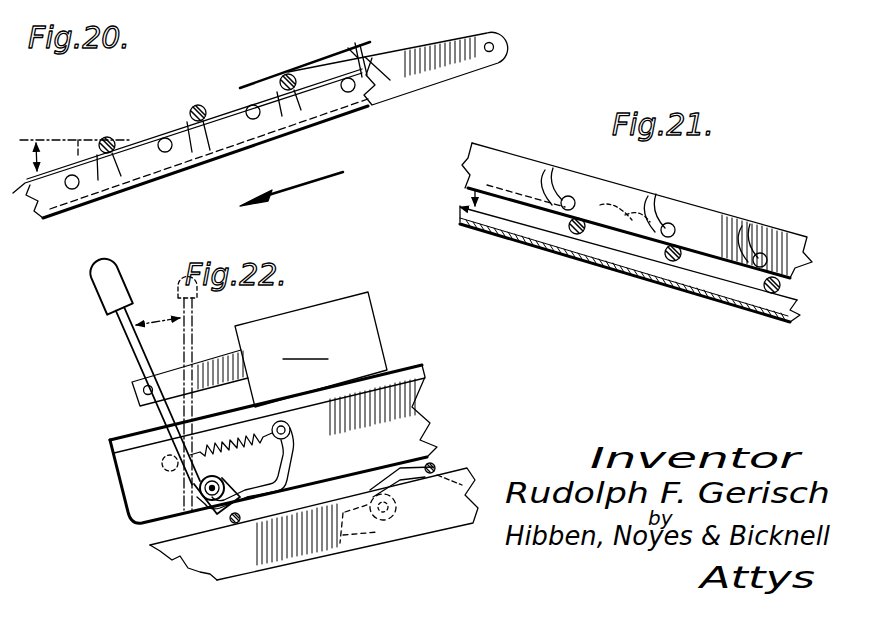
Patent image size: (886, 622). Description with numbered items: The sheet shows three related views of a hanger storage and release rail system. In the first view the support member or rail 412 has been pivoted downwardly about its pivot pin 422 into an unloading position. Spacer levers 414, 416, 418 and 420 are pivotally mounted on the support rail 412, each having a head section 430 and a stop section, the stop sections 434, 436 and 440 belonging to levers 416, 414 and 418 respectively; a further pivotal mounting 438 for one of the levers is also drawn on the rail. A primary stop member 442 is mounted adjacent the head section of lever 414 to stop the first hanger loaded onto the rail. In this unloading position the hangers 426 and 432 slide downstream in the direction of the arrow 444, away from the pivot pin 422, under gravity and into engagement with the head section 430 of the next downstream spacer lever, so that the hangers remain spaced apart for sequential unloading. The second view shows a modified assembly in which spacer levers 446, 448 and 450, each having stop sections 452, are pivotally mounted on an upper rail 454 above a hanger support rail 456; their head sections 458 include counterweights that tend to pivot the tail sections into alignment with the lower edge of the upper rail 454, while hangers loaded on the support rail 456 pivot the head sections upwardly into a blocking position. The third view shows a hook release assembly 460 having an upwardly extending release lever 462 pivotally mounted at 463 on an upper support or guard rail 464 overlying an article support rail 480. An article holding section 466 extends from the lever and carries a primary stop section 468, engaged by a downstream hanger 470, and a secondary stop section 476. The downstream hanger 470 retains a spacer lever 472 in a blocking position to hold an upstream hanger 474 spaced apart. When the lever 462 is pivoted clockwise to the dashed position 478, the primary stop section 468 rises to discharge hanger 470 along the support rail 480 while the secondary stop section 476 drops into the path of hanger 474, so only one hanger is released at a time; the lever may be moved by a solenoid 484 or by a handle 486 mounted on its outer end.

In FIG. 20, the support member 412 is at (470, 77).
In FIG. 20, the spacer lever 414 is at (319, 70).
In FIG. 20, the spacer lever 416 is at (237, 100).
In FIG. 20, the spacer lever 418 is at (151, 128).
In FIG. 20, the spacer lever 420 is at (56, 165).
In FIG. 20, the pivot pin 422 is at (496, 47).
In FIG. 20, the hanger 426 is at (120, 118).
In FIG. 20, the head section 430 is at (274, 82).
In FIG. 20, the hanger 432 is at (200, 104).
In FIG. 20, the stop section 434 is at (204, 160).
In FIG. 20, the stop section 436 is at (292, 130).
In FIG. 20, the rivet 438 is at (288, 82).
In FIG. 20, the stop section 440 is at (98, 190).
In FIG. 20, the primary stop member 442 is at (372, 55).
In FIG. 20, the arrow 444 is at (312, 186).
In FIG. 21, the spacer lever 446 is at (740, 287).
In FIG. 21, the spacer lever 448 is at (635, 256).
In FIG. 21, the spacer lever 450 is at (536, 222).
In FIG. 21, the stop sections 452 is at (556, 210).
In FIG. 21, the upper rail 454 is at (478, 156).
In FIG. 21, the hanger support rail 456 is at (777, 312).
In FIG. 21, the head sections 458 is at (638, 204).
In FIG. 22, the hook release assembly 460 is at (130, 412).
In FIG. 22, the release lever 462 is at (137, 345).
In FIG. 22, the pivot 463 is at (221, 478).
In FIG. 22, the guard rail 464 is at (145, 484).
In FIG. 22, the article holding section 466 is at (291, 432).
In FIG. 22, the primary stop section 468 is at (180, 558).
In FIG. 22, the downstream hanger 470 is at (240, 524).
In FIG. 22, the spacer lever 472 is at (342, 545).
In FIG. 22, the upstream hanger 474 is at (437, 462).
In FIG. 22, the secondary stop section 476 is at (305, 462).
In FIG. 22, the release position 478 is at (194, 335).
In FIG. 22, the article support rail 480 is at (438, 514).
In FIG. 22, the solenoid 484 is at (311, 349).
In FIG. 22, the handle knob 486 is at (108, 292).